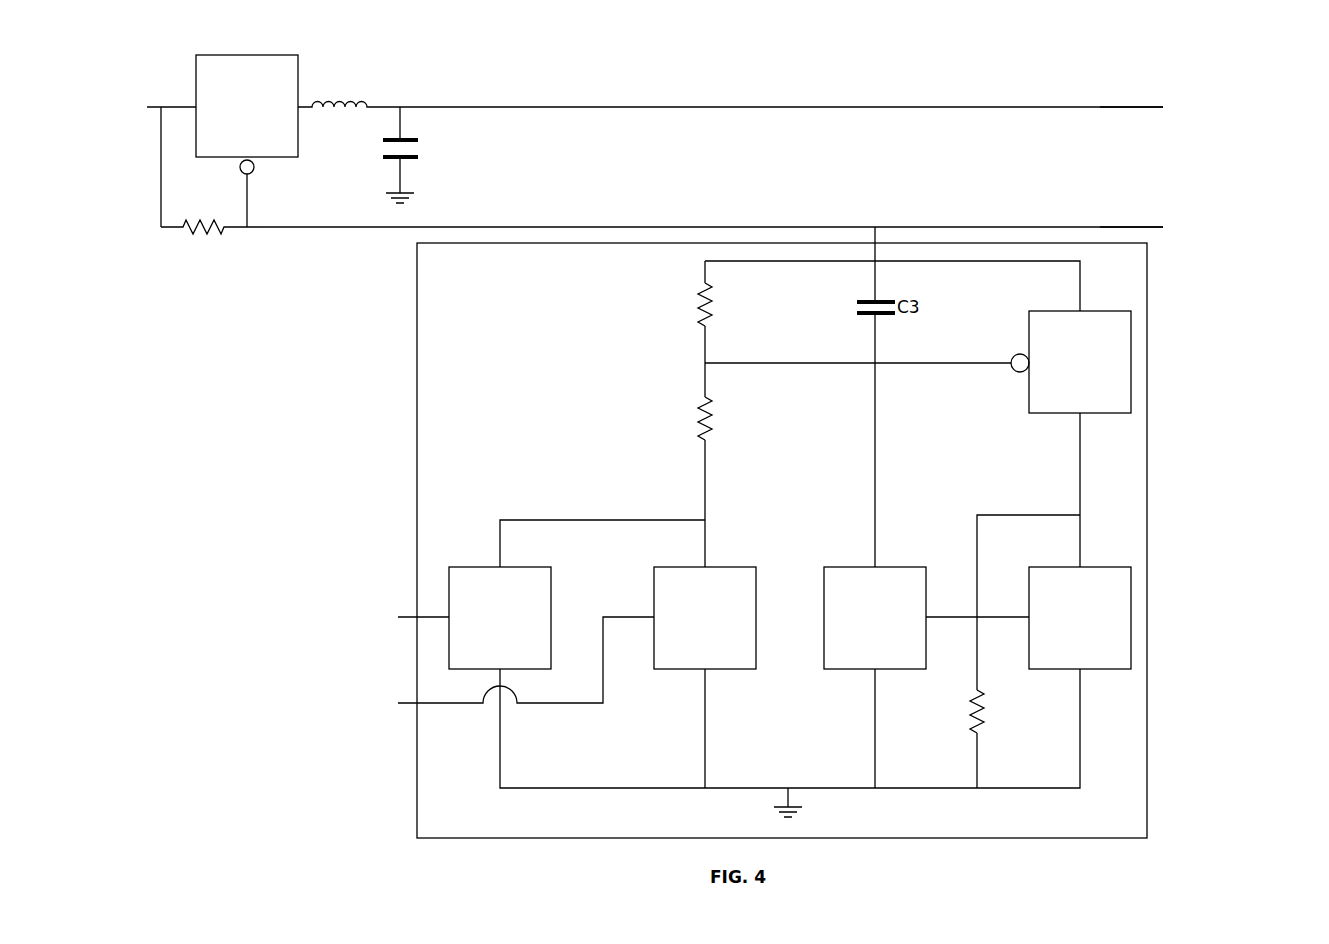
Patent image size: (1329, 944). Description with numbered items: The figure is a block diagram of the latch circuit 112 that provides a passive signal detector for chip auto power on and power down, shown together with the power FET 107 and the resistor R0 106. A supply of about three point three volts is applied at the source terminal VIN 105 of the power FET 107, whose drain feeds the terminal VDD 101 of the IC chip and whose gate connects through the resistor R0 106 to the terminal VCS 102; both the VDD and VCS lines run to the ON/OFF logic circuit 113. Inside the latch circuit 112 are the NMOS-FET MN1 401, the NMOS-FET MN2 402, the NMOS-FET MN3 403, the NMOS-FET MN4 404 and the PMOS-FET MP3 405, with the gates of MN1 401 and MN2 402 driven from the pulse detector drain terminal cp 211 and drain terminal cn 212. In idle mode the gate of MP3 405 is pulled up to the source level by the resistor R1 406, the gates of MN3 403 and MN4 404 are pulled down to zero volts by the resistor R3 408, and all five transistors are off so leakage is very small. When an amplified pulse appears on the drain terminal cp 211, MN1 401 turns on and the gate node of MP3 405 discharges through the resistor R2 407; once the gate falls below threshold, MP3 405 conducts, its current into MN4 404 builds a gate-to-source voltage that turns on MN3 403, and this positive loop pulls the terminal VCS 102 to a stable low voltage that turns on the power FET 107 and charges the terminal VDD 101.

The source terminal VIN 105 is at (166, 104).
The power FET 107 is at (234, 129).
The resistor R0 106 is at (207, 234).
The terminal VDD 101 is at (400, 107).
The terminal VCS 102 is at (400, 228).
The ON/OFF logic circuit 113 is at (1189, 157).
The latch circuit 112 is at (1147, 346).
The resistor R1 406 is at (700, 321).
The resistor R2 407 is at (700, 437).
The resistor R3 408 is at (972, 728).
The PMOS-FET MP3 405 is at (1066, 383).
The NMOS-FET MN1 401 is at (486, 639).
The NMOS-FET MN2 402 is at (691, 639).
The NMOS-FET MN3 403 is at (861, 639).
The NMOS-FET MN4 404 is at (1066, 639).
The drain terminal cp 211 is at (335, 609).
The drain terminal cn 212 is at (438, 672).